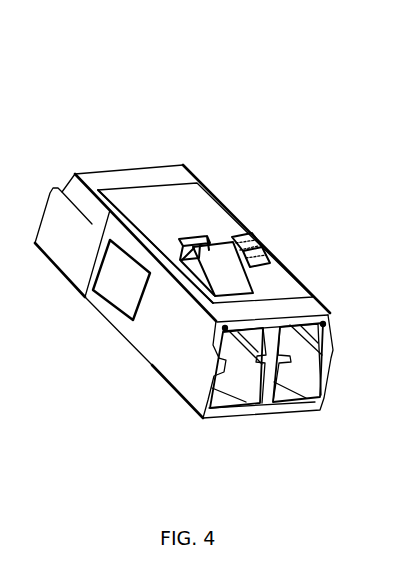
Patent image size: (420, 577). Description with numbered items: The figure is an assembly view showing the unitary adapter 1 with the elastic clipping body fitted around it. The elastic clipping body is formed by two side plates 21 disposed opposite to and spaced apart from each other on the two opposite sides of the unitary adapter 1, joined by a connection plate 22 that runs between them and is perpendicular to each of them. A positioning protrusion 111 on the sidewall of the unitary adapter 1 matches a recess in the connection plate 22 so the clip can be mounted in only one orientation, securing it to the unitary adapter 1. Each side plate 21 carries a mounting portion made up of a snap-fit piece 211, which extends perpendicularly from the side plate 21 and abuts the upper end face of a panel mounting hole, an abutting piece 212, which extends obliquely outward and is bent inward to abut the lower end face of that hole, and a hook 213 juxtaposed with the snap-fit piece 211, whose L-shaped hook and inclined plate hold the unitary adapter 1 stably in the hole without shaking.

The unitary adapter 1 is at (132, 176).
The side plate 21 is at (198, 217).
The connection plate 22 is at (141, 342).
The positioning protrusion 111 is at (125, 313).
The snap-fit piece 211 is at (190, 236).
The abutting piece 212 is at (230, 277).
The hook 213 is at (240, 268).